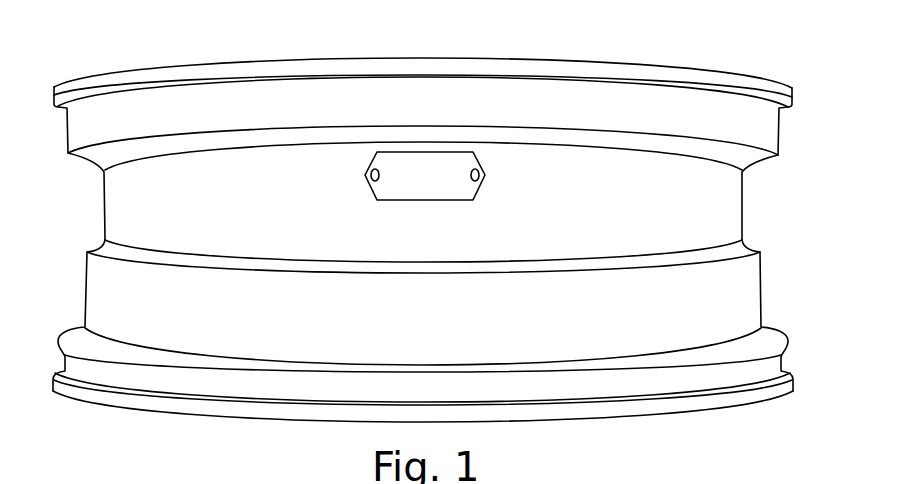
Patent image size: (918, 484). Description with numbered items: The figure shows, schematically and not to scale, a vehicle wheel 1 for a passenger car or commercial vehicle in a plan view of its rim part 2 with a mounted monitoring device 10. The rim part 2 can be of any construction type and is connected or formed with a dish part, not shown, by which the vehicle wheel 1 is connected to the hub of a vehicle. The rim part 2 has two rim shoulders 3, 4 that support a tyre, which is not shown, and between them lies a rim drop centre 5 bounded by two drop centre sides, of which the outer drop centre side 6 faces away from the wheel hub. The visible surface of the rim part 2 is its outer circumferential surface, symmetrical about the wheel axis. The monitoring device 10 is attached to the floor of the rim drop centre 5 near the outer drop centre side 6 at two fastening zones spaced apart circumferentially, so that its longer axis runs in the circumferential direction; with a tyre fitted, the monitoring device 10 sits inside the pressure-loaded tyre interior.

The vehicle wheel 1 is at (668, 52).
The rim part 2 is at (242, 170).
The rim shoulder 3 is at (477, 103).
The rim shoulder 4 is at (135, 377).
The rim drop centre 5 is at (536, 170).
The drop centre side 6 is at (700, 148).
The monitoring device 10 is at (425, 172).